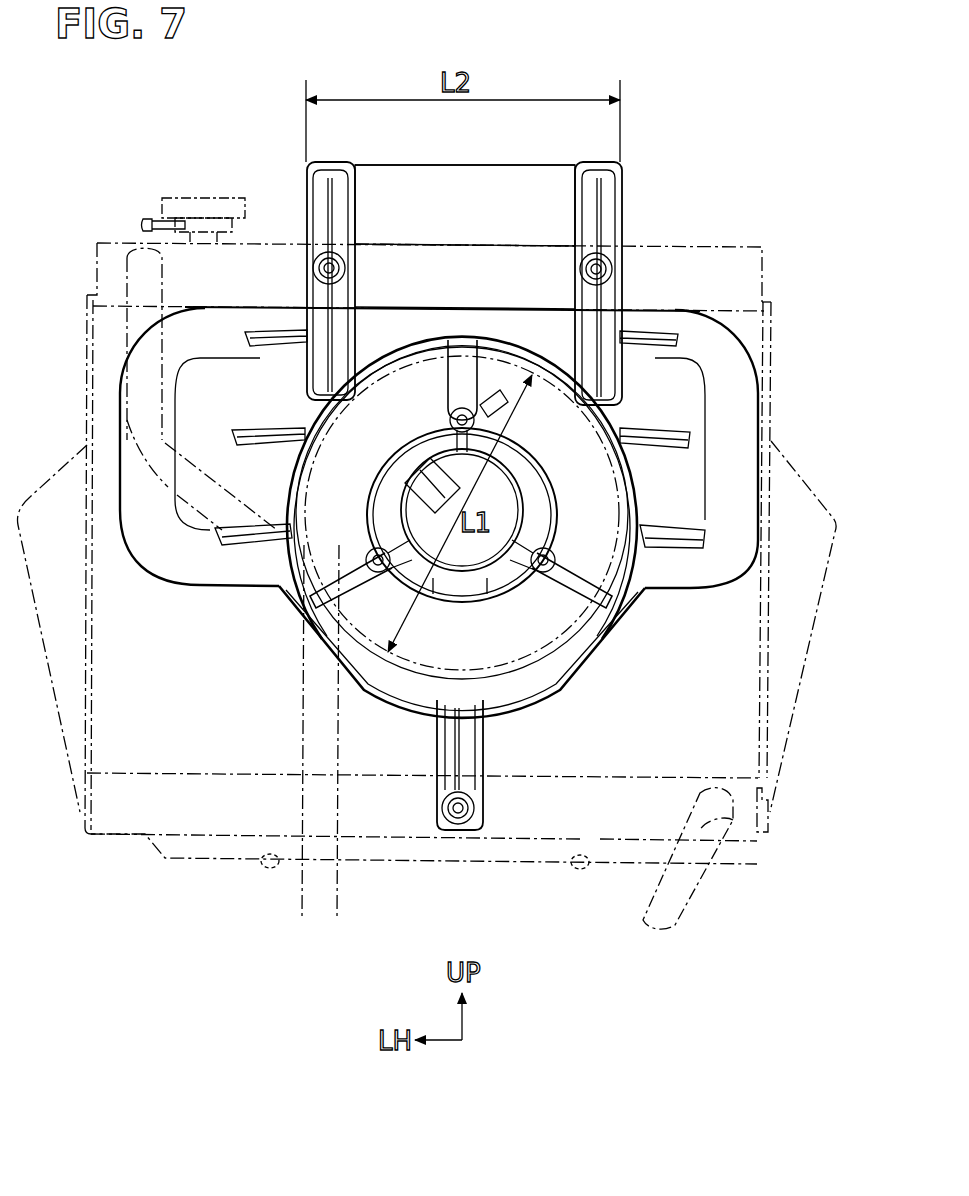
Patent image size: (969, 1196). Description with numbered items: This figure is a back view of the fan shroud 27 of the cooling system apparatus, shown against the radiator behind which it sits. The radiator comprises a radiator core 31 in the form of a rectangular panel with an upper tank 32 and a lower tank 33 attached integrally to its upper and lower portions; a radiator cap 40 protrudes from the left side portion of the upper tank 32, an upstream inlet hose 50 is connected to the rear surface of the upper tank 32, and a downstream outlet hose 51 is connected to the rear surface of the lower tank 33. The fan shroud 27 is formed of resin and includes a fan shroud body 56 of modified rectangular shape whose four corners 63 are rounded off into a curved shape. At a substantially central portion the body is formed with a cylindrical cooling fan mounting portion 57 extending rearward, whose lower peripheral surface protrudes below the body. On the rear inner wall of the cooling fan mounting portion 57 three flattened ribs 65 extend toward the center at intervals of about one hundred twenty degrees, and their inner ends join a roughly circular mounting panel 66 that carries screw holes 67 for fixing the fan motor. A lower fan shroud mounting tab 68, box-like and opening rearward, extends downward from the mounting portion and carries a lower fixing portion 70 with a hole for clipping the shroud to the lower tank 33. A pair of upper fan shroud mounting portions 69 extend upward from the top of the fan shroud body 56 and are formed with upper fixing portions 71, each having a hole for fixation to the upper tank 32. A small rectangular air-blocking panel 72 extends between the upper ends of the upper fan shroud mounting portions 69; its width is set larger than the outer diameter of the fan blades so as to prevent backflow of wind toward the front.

The fan shroud 27 is at (667, 138).
The radiator core 31 is at (87, 398).
The upper tank 32 is at (97, 262).
The lower tank 33 is at (122, 836).
The radiator cap 40 is at (190, 198).
The upstream inlet hose 50 is at (300, 712).
The downstream outlet hose 51 is at (683, 905).
The fan shroud body 56 is at (652, 330).
The cooling fan mounting portion 57 is at (385, 655).
The corners 63 is at (140, 338).
The ribs 65 is at (448, 395).
The mounting panel 66 is at (543, 492).
The screw holes 67 is at (450, 423).
The lower fan shroud mounting tab 68 is at (488, 758).
The upper fan shroud mounting portions 69 is at (307, 193).
The lower fixing portion 70 is at (460, 826).
The upper fixing portions 71 is at (345, 268).
The air-blocking panel 72 is at (462, 190).